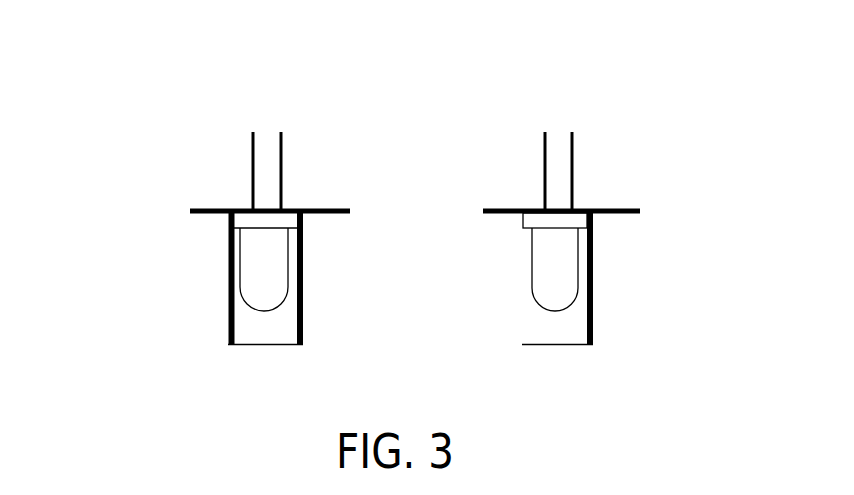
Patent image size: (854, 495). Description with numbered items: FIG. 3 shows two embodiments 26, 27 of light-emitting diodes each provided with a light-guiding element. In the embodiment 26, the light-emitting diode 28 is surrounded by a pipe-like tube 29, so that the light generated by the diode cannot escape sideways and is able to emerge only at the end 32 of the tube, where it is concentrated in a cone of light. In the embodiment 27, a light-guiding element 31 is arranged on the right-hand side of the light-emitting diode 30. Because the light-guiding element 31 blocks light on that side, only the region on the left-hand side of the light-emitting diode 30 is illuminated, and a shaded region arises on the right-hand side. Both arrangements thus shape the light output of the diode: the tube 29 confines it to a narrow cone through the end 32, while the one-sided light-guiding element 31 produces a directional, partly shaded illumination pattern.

The embodiment 26 is at (168, 121).
The embodiment 27 is at (677, 120).
The light-emitting diode 28 is at (262, 300).
The pipe-like tube 29 is at (226, 283).
The light-emitting diode 30 is at (547, 273).
The light-guiding element 31 is at (594, 292).
The end of the tube 32 is at (280, 352).